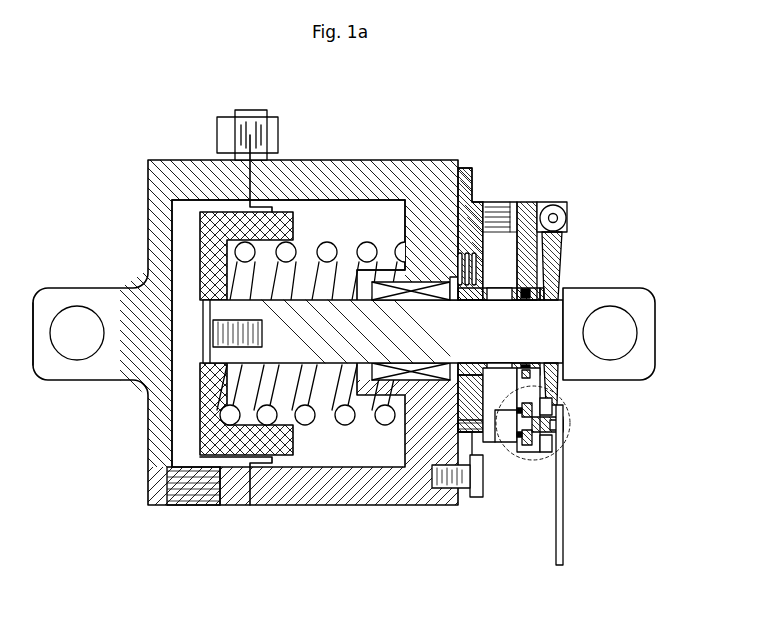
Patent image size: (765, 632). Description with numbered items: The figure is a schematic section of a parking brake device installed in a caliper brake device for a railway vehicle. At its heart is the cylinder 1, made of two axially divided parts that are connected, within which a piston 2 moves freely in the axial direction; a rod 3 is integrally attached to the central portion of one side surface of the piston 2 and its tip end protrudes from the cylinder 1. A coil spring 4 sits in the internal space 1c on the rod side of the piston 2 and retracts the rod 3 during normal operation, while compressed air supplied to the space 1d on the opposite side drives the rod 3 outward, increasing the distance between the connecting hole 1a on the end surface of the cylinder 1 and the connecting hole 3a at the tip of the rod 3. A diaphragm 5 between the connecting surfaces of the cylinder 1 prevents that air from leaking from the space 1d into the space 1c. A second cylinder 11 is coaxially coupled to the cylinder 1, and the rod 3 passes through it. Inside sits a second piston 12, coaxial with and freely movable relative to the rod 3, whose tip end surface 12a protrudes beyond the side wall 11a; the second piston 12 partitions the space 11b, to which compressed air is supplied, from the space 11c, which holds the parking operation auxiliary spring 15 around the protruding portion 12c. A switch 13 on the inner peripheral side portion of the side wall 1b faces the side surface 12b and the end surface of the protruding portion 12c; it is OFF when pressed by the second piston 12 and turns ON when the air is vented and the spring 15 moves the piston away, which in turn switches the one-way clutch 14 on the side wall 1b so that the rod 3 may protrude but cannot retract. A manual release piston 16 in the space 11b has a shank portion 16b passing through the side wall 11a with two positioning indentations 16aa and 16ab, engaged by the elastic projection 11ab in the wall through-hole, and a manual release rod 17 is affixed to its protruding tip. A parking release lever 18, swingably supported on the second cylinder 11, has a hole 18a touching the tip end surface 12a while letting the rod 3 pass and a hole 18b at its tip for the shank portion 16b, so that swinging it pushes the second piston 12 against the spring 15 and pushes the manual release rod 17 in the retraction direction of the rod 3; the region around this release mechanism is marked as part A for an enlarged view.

The cylinder 1 is at (355, 190).
The connecting hole 1a is at (73, 365).
The side wall 1b is at (413, 195).
The internal space 1c is at (313, 222).
The space 1d is at (183, 430).
The piston 2 is at (278, 460).
The rod 3 is at (340, 345).
The connecting hole 3a is at (630, 325).
The coil spring 4 is at (328, 243).
The diaphragm 5 is at (240, 505).
The second cylinder 11 is at (496, 483).
The side wall 11a is at (524, 240).
The elastic projection 11ab is at (531, 455).
The space 11b is at (567, 228).
The space 11c is at (478, 205).
The second piston 12 is at (493, 215).
The tip end surface 12a is at (553, 285).
The side surface 12b is at (420, 470).
The protruding portion 12c is at (480, 305).
The switch 13 is at (455, 305).
The one-way clutch 14 is at (370, 392).
The parking operation auxiliary spring 15 is at (460, 235).
The manual release piston 16 is at (567, 438).
The positioning indentation 16aa is at (557, 385).
The positioning indentation 16ab is at (560, 445).
The shank portion 16b is at (558, 410).
The manual release rod 17 is at (565, 528).
The parking release lever 18 is at (571, 318).
The hole 18a is at (552, 370).
The hole 18b is at (572, 432).
The part A is at (545, 462).